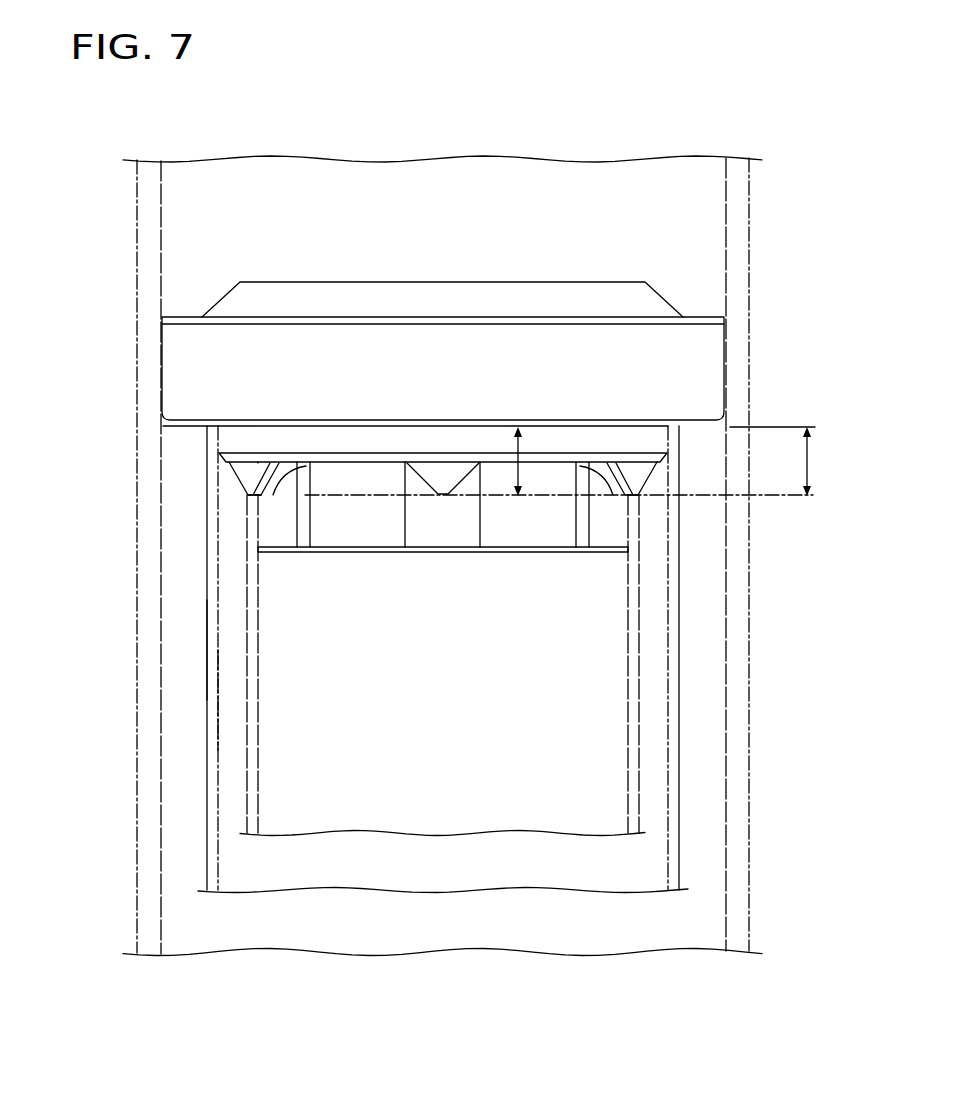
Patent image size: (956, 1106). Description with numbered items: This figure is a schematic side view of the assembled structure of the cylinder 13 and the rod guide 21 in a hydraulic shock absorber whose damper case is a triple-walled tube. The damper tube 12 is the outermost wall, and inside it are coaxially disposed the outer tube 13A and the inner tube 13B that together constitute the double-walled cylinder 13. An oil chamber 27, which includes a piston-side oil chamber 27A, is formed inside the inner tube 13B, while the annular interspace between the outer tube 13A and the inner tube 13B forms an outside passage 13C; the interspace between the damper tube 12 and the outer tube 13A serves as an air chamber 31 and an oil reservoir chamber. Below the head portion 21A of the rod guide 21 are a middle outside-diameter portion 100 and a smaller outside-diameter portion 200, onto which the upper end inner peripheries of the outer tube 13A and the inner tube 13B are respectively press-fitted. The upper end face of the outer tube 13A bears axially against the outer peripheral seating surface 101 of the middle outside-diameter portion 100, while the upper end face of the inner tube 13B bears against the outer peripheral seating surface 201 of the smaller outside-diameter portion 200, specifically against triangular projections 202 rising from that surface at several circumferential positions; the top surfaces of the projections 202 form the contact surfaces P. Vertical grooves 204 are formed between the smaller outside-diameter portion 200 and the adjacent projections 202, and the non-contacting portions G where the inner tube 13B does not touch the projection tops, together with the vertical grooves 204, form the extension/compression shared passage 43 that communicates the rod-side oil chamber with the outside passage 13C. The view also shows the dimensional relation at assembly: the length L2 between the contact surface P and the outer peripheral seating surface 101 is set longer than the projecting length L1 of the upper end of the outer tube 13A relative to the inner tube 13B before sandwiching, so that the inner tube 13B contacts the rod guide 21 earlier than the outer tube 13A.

The damper tube 12 is at (136, 263).
The rod guide 21 is at (298, 340).
The head portion 21A is at (192, 345).
The outer peripheral seating surface 101 is at (180, 425).
The air chamber 31 is at (185, 463).
The outer peripheral seating surface 201 is at (245, 478).
The projection 202 is at (250, 488).
The middle outside-diameter portion 100 is at (258, 437).
The smaller outside-diameter portion 200 is at (285, 482).
The vertical groove 204 is at (305, 478).
The non-contacting portion G is at (387, 490).
The extension/compression shared passage 43 is at (350, 478).
The contact surface P is at (268, 495).
The length between projection top surface and outer peripheral seating surface L2 is at (520, 450).
The projecting length L1 is at (785, 461).
The cylinder 13 is at (207, 656).
The outer tube 13A is at (207, 678).
The inner tube 13B is at (247, 712).
The outside passage 13C is at (232, 757).
The oil chamber 27 is at (568, 683).
The piston-side oil chamber 27A is at (568, 737).